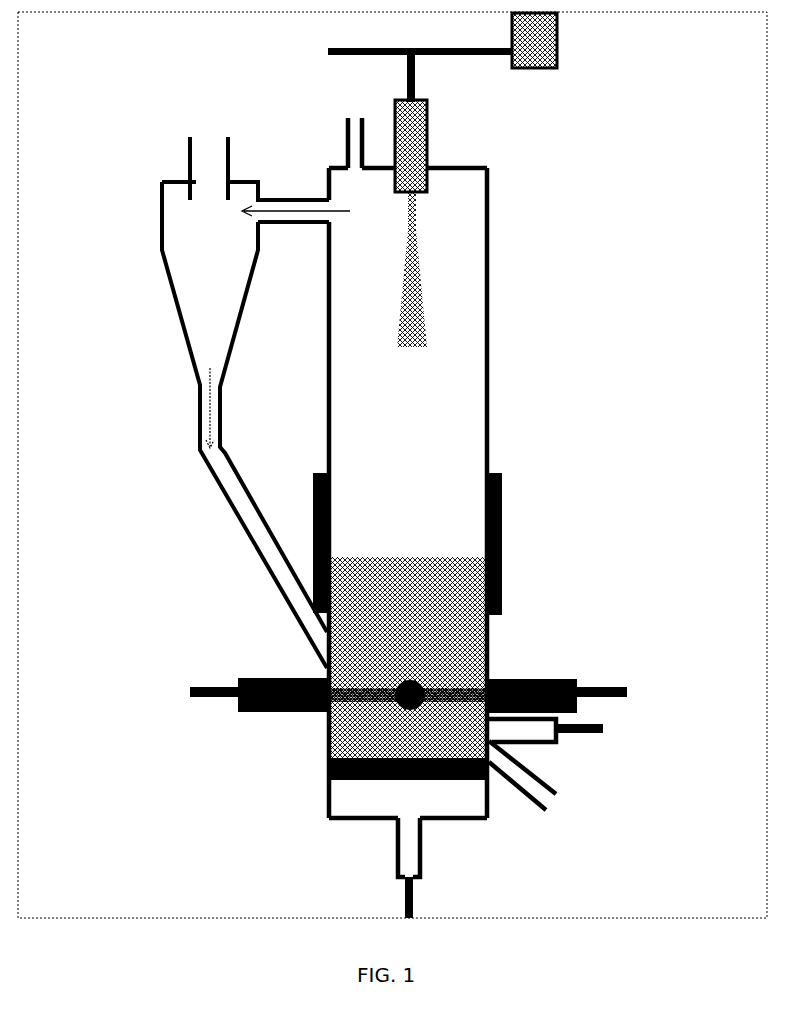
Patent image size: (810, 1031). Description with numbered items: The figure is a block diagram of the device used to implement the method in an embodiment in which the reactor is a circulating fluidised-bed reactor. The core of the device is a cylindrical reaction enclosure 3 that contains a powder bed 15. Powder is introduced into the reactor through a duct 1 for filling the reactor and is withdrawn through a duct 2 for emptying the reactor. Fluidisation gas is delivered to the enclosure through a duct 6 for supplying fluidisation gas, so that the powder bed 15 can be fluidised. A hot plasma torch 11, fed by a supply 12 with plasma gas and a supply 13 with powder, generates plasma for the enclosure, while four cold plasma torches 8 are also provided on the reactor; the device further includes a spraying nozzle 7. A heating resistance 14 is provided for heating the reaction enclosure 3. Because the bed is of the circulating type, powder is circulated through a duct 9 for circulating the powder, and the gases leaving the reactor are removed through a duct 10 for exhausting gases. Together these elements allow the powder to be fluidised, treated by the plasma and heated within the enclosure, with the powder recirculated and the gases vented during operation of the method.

The duct for filling the reactor 1 is at (335, 141).
The duct for emptying the reactor 2 is at (522, 789).
The cylindrical reaction enclosure 3 is at (427, 493).
The duct for supplying fluidisation gas 6 is at (394, 868).
The spraying nozzle 7 is at (546, 739).
The cold plasma torches 8 is at (433, 717).
The duct for circulating the powder 9 is at (256, 425).
The duct for exhausting gases 10 is at (227, 167).
The hot plasma torch 11 is at (430, 223).
The supply with plasma gas 12 is at (408, 370).
The supply with powder 13 is at (554, 40).
The heating resistance 14 is at (404, 544).
The powder bed 15 is at (408, 657).